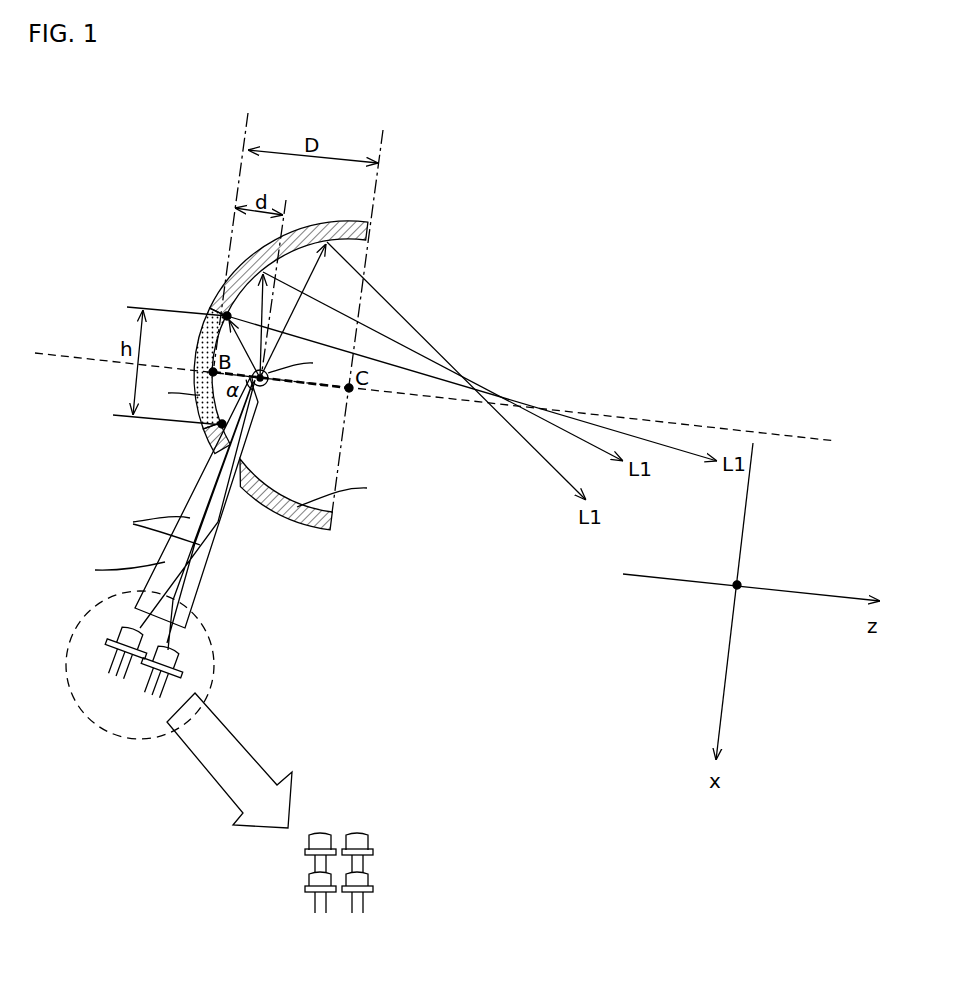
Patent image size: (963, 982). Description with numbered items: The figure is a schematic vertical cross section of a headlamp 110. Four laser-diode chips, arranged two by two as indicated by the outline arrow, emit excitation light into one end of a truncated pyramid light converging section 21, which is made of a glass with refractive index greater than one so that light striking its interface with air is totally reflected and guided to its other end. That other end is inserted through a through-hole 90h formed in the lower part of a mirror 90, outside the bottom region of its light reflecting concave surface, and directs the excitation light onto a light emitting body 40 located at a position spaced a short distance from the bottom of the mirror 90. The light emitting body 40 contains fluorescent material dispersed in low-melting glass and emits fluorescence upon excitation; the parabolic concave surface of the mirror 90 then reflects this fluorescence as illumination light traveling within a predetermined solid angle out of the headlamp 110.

The headlamp 110 is at (445, 137).
The mirror 90 is at (237, 280).
The through-hole 90h is at (236, 489).
The light emitting body 40 is at (266, 384).
The truncated pyramid light converging section 21 is at (203, 573).